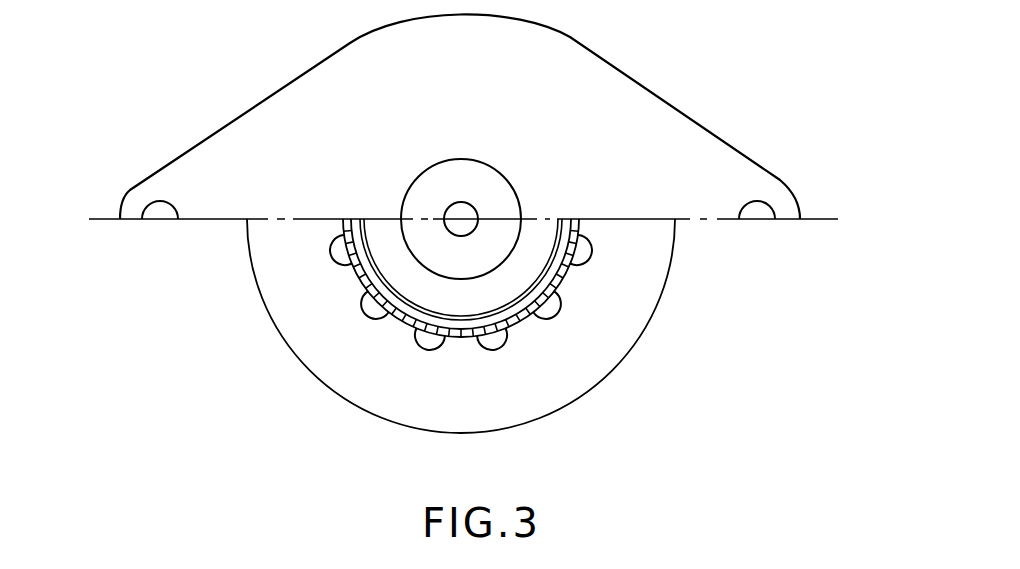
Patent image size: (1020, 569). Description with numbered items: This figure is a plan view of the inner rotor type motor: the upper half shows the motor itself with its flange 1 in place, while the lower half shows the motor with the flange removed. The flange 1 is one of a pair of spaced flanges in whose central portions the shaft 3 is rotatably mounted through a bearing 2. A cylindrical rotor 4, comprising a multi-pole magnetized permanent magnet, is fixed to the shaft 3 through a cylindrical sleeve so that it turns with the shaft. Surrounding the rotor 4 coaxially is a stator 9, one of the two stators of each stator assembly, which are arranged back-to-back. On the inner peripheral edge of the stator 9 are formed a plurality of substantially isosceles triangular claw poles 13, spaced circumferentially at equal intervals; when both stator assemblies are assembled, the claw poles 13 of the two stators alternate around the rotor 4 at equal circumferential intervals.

The flange 1 is at (571, 82).
The bearing 2 is at (427, 193).
The shaft 3 is at (470, 212).
The rotor 4 is at (383, 252).
The stator 9 is at (313, 337).
The claw pole 13 is at (505, 332).